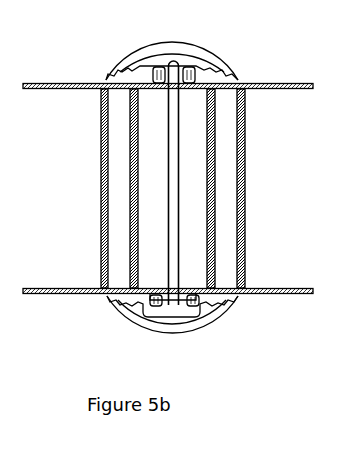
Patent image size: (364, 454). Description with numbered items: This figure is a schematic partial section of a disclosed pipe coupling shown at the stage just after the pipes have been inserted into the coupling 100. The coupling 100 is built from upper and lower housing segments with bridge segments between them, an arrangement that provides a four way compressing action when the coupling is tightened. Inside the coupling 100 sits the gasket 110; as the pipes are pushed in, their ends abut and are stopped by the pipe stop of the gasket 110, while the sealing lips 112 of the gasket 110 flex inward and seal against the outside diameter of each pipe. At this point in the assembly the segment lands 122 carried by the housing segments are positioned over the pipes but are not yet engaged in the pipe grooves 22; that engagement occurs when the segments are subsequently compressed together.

The coupling 100 is at (133, 52).
The gasket 110 is at (210, 60).
The sealing lips 112 is at (153, 293).
The segment lands 122 is at (100, 102).
The pipe grooves 22 is at (100, 278).